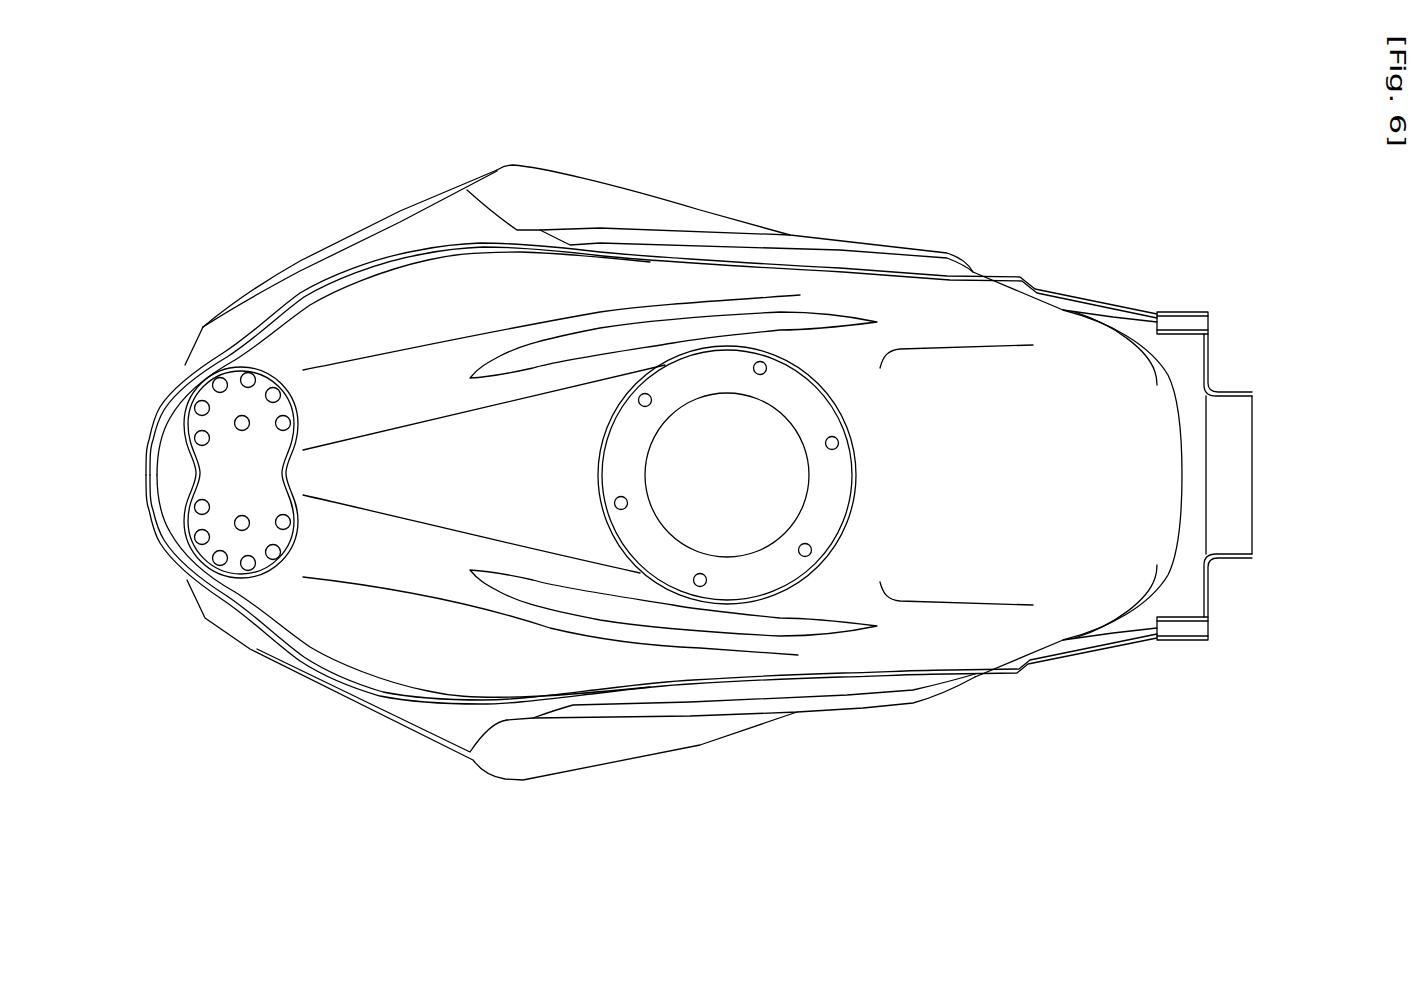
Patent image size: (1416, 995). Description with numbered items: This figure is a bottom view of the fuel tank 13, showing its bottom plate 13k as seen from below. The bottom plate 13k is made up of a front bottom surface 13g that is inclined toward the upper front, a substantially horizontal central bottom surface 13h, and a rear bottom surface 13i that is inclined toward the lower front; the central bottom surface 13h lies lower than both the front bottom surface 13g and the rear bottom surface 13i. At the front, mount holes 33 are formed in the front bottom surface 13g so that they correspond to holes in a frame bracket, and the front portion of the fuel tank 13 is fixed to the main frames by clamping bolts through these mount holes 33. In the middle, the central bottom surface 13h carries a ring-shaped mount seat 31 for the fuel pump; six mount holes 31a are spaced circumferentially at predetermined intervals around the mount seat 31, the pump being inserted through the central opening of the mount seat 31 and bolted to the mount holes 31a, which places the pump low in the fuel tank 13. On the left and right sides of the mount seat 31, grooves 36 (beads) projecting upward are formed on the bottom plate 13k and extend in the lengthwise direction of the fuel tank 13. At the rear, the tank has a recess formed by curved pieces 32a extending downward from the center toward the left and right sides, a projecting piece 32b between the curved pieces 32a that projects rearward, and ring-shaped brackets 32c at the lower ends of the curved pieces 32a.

The fuel tank 13 is at (810, 193).
The bottom plate 13k is at (345, 308).
The front bottom surface 13g is at (337, 650).
The central bottom surface 13h is at (712, 668).
The rear bottom surface 13i is at (1023, 583).
The mount seat 31 is at (617, 472).
The mount holes 31a is at (760, 368).
The curved pieces 32a is at (1190, 367).
The projecting piece 32b is at (1245, 465).
The ring-shaped brackets 32c is at (1187, 320).
The mount holes 33 is at (242, 423).
The grooves 36 is at (820, 320).